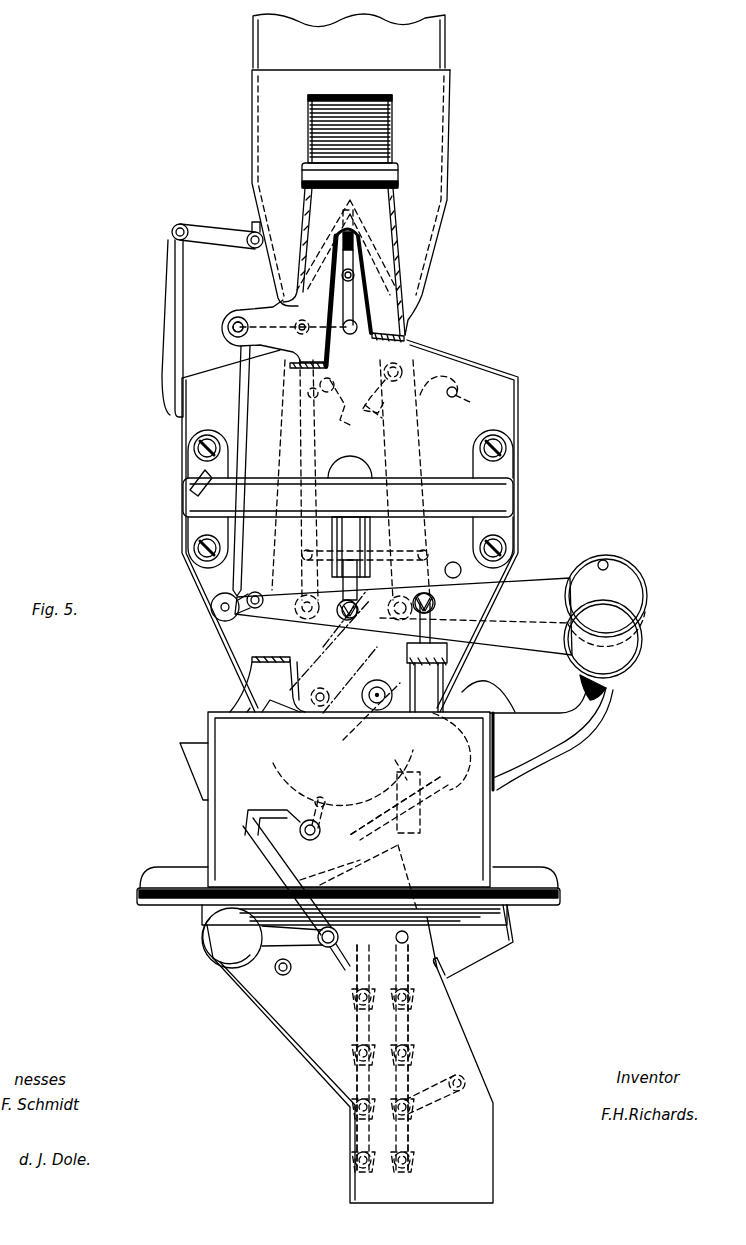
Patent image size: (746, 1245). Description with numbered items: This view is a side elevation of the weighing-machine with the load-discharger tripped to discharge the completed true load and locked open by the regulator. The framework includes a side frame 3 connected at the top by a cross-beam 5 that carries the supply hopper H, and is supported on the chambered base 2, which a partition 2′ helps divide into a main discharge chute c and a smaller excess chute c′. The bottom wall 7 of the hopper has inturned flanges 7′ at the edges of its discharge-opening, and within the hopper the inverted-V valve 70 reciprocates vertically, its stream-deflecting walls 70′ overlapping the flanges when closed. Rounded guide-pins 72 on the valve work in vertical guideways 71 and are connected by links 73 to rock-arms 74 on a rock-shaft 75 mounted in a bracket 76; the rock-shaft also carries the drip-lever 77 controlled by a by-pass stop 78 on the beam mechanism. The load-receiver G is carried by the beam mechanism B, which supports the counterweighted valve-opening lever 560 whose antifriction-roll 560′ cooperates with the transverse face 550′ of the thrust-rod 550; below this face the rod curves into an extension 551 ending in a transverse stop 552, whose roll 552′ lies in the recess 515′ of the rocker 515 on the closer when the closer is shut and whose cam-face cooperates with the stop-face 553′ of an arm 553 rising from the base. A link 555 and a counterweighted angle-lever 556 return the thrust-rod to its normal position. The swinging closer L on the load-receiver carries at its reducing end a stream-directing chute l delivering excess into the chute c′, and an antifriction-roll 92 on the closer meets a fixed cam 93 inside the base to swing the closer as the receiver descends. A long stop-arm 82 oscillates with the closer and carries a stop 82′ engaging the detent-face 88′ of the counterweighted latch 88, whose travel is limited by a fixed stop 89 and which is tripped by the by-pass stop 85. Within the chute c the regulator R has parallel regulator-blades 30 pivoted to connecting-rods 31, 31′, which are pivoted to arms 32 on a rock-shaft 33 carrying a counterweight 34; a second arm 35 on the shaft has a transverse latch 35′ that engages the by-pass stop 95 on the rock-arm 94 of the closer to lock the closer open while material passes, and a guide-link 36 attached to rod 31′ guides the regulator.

The supply hopper H is at (351, 174).
The cross-beam 5 is at (390, 140).
The side frame 3 is at (302, 217).
The bottom wall 7 is at (420, 305).
The inturned flanged portions 7′ is at (340, 330).
The valve 70 is at (362, 292).
The stream-deflecting walls 70′ is at (344, 312).
The vertical guideways 71 is at (352, 245).
The guide-pins 72 is at (343, 274).
The links 73 is at (292, 310).
The rock-arms 74 is at (282, 342).
The rock-shaft 75 is at (230, 336).
The bracket 76 is at (230, 320).
The drip-lever 77 is at (247, 401).
The by-pass stop 78 is at (268, 560).
The stop-arm 82 is at (262, 540).
The stop 82′ is at (203, 452).
The by-pass stop 85 is at (338, 392).
The latch 88 is at (393, 384).
The detent-face 88′ is at (450, 400).
The fixed stop 89 is at (458, 392).
The load-receiver G is at (518, 418).
The thrust-rod 550 is at (300, 448).
The transverse face 550′ is at (348, 486).
The extension 551 is at (362, 628).
The transverse member 552 is at (315, 706).
The antifriction-roll 552′ is at (373, 682).
The arm 553 is at (262, 668).
The stop-face 553′ is at (262, 714).
The link 555 is at (400, 552).
The counterweighted angle-lever 556 is at (453, 562).
The counterweighted lever 560 is at (572, 583).
The antifriction-roll 560′ is at (252, 614).
The beam mechanism B is at (403, 616).
The antifriction-roll 92 is at (427, 652).
The fixed cam 93 is at (407, 780).
The rock-arm 94 is at (330, 790).
The rocker 515 is at (388, 760).
The recess 515′ is at (340, 735).
The swinging closer L is at (435, 785).
The stream-directing chute l is at (498, 690).
The chambered supporting-base 2 is at (488, 846).
The partition 2′ is at (362, 880).
The second arm 35 is at (262, 855).
The transverse latch 35′ is at (272, 820).
The by-pass stop 95 is at (305, 840).
The counterweight 34 is at (230, 945).
The rock-shaft 33 is at (327, 948).
The arms 32 is at (442, 965).
The main discharge-chute c is at (328, 1078).
The excess discharge-chute c′ is at (494, 958).
The regulator R is at (391, 1057).
The regulator-blades 30 is at (383, 1066).
The connecting-rod 31 is at (357, 1070).
The connecting-rod 31′ is at (410, 1078).
The guide-link 36 is at (438, 1102).